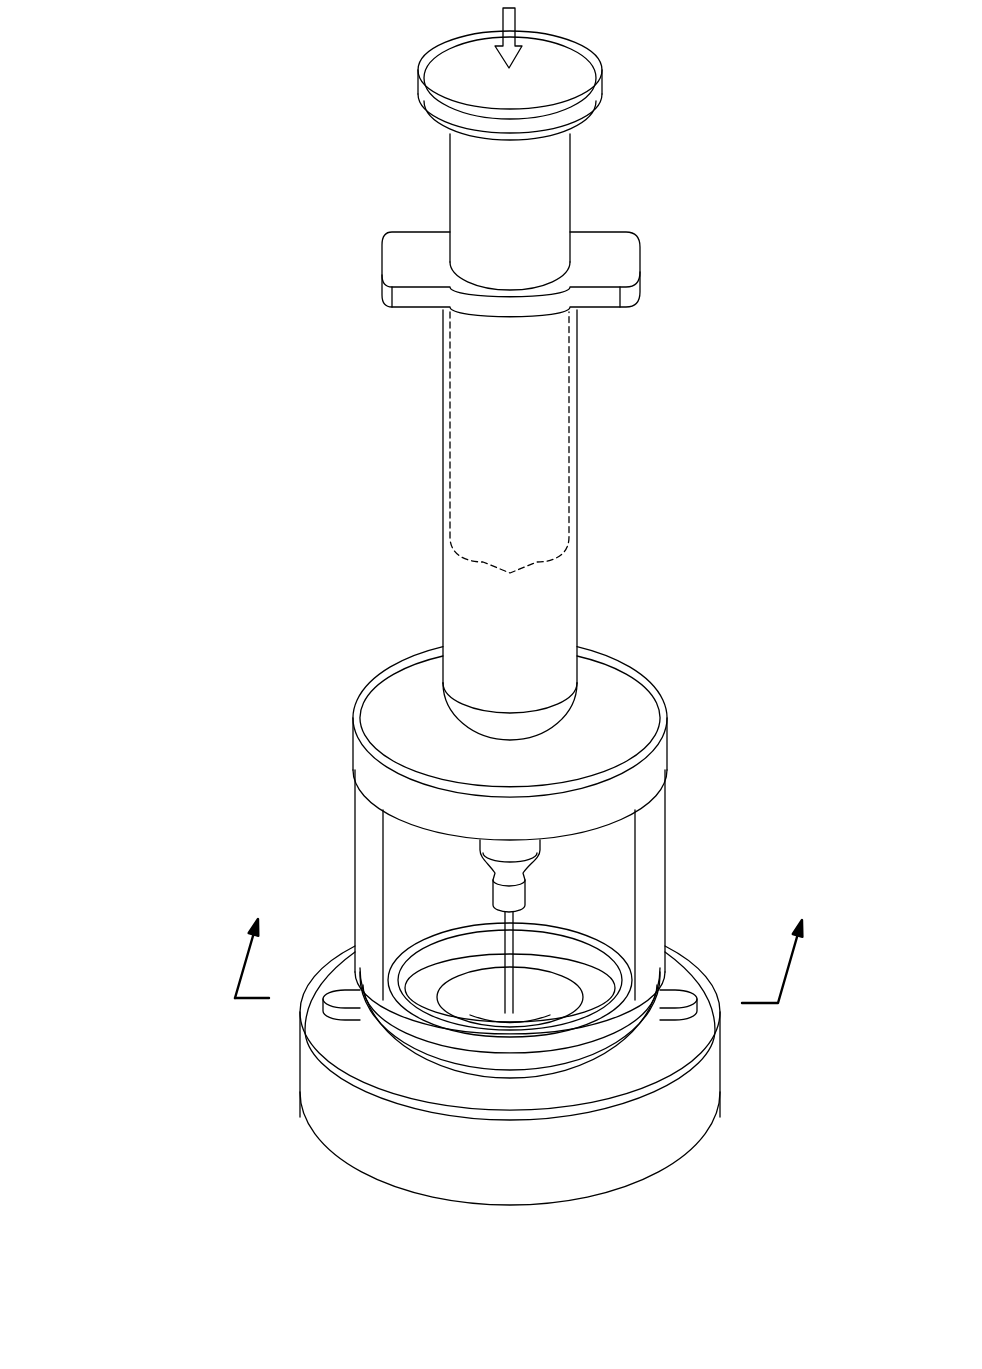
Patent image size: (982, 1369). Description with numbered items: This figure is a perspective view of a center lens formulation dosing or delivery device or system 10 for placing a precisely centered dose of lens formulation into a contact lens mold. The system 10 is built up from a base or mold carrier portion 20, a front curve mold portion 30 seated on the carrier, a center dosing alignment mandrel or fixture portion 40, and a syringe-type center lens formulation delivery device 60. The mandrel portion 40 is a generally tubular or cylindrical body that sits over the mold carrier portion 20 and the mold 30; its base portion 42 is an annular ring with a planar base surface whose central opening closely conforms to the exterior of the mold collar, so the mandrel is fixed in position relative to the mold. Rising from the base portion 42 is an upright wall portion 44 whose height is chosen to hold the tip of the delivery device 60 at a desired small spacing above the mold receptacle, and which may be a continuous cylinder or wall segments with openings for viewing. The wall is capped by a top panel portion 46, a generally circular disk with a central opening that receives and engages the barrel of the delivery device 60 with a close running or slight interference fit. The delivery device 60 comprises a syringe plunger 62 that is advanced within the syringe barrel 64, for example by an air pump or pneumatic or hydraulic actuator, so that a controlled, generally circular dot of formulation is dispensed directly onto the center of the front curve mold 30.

The center lens formulation dosing or delivery device or system 10 is at (170, 552).
The base or mold carrier portion 20 is at (264, 1162).
The mold portion 30 is at (546, 984).
The center dosing alignment mandrel or fixture portion 40 is at (268, 798).
The base portion 42 is at (542, 1060).
The upright wall portion 44 is at (645, 870).
The top panel portion 46 is at (607, 702).
The center lens formulation delivery device 60 is at (655, 387).
The syringe plunger 62 is at (485, 180).
The syringe barrel 64 is at (485, 607).